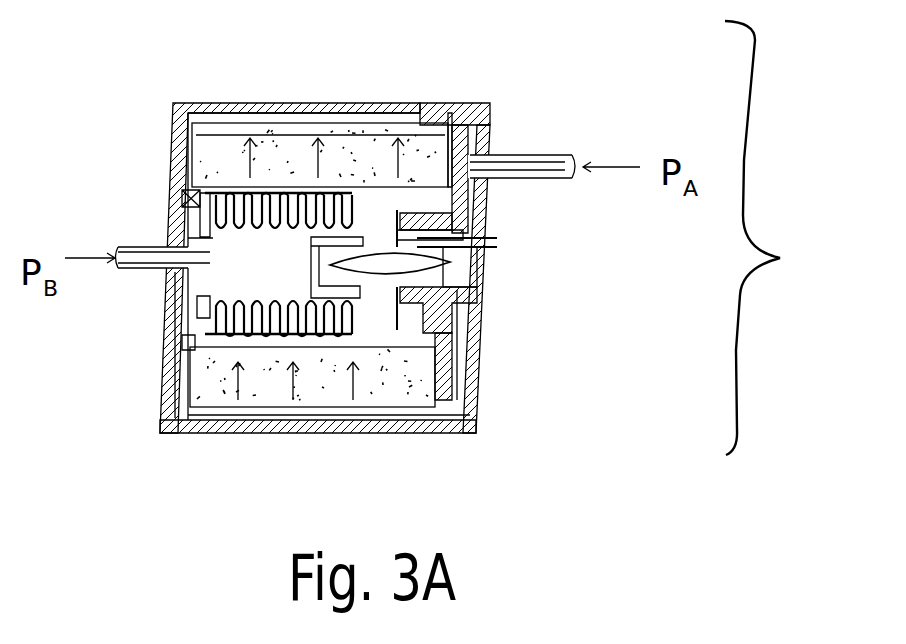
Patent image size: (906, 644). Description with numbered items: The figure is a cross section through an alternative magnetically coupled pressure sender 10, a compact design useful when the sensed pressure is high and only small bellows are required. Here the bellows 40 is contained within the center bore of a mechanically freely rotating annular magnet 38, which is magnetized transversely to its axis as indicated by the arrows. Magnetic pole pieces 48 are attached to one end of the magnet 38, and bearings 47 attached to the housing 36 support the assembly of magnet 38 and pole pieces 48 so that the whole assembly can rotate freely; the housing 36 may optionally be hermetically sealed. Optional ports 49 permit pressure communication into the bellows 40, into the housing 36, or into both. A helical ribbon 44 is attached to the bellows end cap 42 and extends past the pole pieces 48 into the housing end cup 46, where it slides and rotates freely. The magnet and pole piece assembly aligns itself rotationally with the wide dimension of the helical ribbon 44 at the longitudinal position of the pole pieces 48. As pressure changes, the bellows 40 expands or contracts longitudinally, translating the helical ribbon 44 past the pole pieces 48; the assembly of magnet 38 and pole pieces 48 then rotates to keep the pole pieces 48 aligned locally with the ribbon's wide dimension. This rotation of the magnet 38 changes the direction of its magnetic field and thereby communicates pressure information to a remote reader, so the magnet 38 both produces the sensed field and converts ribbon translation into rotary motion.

The magnetically coupled pressure sender 10 is at (779, 238).
The housing 36 is at (403, 103).
The annular magnet 38 is at (275, 142).
The bellows 40 is at (197, 328).
The bellows end cap 42 is at (312, 280).
The helical ribbon 44 is at (497, 240).
The housing end cup 46 is at (478, 282).
The bearings 47 is at (177, 190).
The magnetic pole pieces 48 is at (473, 140).
The ports 49 is at (120, 247).